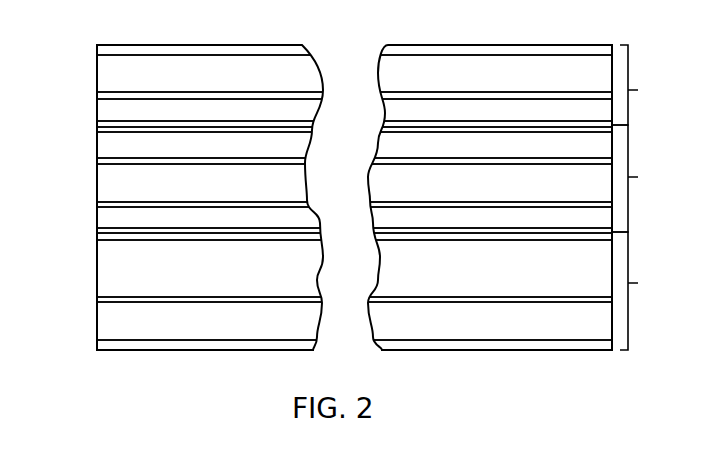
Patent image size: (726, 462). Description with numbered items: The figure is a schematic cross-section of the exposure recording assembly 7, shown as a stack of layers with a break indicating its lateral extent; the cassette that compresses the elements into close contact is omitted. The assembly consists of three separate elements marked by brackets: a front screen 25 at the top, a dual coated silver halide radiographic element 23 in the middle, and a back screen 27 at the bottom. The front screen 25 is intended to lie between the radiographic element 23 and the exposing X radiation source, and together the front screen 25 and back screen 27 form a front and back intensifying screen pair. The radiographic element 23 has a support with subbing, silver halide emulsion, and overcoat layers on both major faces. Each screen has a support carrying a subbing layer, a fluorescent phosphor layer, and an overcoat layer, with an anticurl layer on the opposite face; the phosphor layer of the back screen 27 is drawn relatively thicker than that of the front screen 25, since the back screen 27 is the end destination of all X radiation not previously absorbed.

The exposure recording assembly 7 is at (553, 28).
The dual coated silver halide radiographic element 23 is at (638, 178).
The front screen 25 is at (638, 85).
The back screen 27 is at (638, 291).